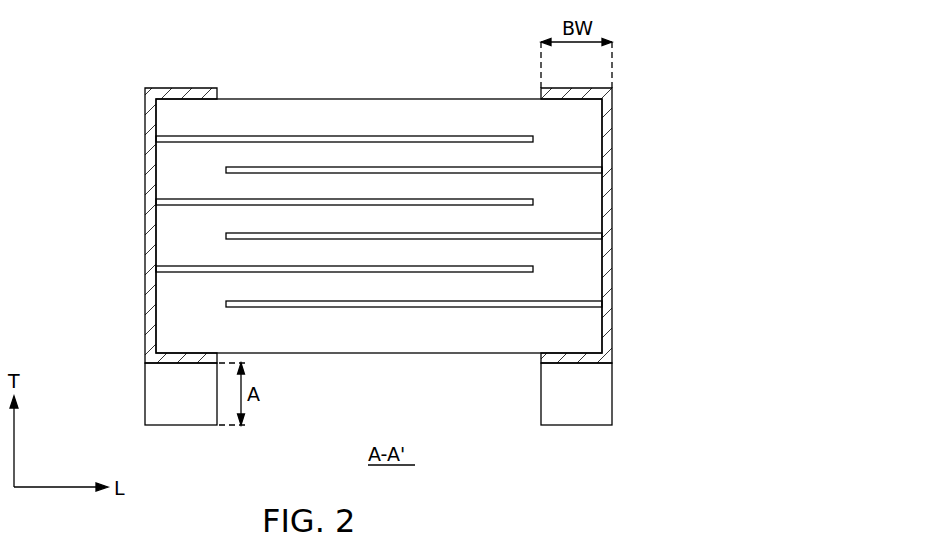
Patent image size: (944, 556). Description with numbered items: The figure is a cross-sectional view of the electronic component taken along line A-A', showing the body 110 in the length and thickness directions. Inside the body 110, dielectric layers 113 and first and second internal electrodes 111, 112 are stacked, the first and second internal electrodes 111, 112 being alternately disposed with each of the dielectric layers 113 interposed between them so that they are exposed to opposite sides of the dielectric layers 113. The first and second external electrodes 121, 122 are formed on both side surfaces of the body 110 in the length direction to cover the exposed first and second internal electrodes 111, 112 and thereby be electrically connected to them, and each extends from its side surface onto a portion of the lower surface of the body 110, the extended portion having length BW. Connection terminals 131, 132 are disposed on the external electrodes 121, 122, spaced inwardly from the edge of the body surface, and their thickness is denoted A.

The body 110 is at (378, 97).
The first internal electrode 111 is at (298, 166).
The second internal electrode 112 is at (250, 135).
The dielectric layer 113 is at (473, 110).
The first external electrode 121 is at (607, 112).
The second external electrode 122 is at (150, 110).
The connection terminal 131 is at (607, 398).
The connection terminal 132 is at (150, 398).